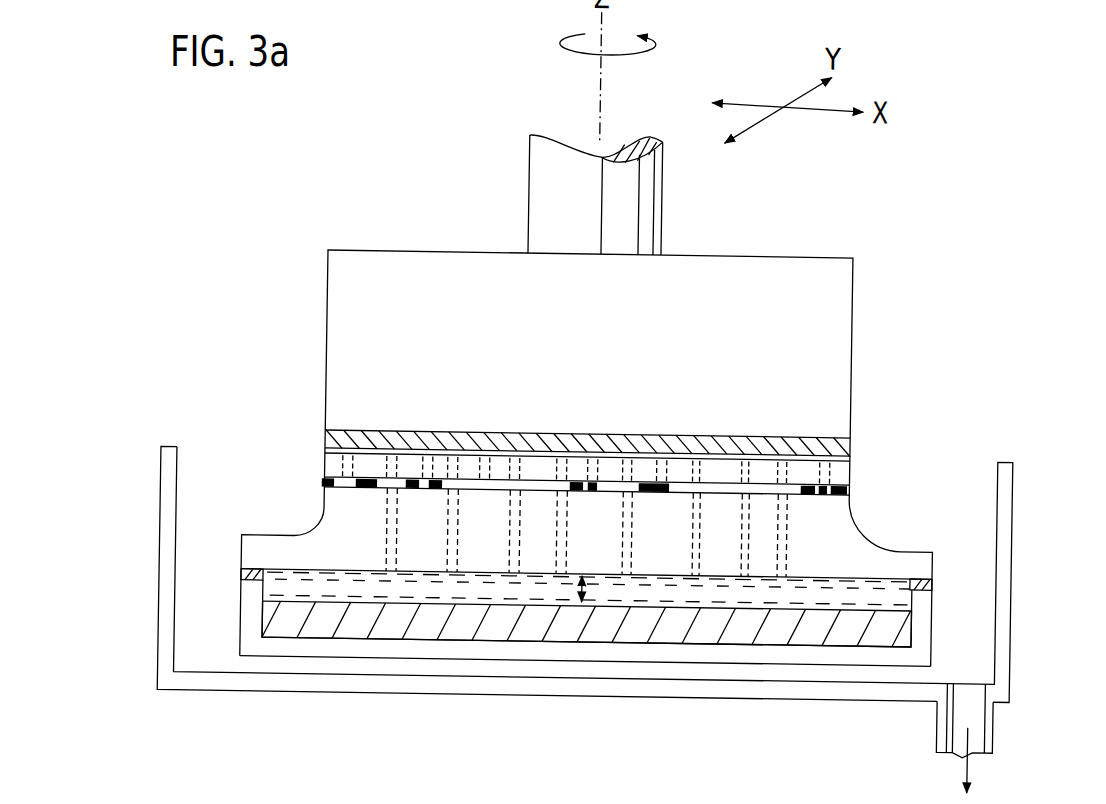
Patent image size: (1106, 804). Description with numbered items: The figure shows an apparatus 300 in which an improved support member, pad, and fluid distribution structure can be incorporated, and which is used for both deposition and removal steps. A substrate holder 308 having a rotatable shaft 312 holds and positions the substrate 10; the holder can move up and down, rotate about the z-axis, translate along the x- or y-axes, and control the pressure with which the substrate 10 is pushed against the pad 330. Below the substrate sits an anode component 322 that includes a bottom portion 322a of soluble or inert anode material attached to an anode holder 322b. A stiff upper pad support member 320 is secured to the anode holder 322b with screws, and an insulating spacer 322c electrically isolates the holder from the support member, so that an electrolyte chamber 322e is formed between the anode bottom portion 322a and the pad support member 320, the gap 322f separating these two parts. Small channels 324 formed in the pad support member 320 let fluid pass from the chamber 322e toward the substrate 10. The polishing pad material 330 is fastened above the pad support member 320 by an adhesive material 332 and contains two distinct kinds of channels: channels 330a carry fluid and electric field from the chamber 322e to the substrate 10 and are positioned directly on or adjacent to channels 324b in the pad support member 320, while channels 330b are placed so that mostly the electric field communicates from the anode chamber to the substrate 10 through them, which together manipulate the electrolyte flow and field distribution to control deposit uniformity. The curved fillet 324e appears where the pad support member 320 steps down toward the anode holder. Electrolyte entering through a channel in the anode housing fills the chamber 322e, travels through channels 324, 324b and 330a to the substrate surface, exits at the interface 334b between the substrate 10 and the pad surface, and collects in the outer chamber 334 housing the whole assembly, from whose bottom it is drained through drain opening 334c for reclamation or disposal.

The apparatus 300 is at (308, 230).
The rotatable shaft 312 is at (659, 210).
The substrate holder 308 is at (853, 302).
The substrate 10 is at (853, 444).
The interface 334b is at (333, 452).
The polishing pad material 330 is at (329, 463).
The channels 330a is at (748, 439).
The channels 330b is at (442, 443).
The adhesive material 332 is at (331, 478).
The pad support member 320 is at (354, 518).
The fillet region 324e is at (891, 529).
The anode component 322 is at (204, 647).
The bottom portion 322a is at (307, 620).
The anode holder 322b is at (258, 646).
The insulating spacer 322c is at (247, 576).
The electrolyte chamber 322e is at (888, 590).
The gap 322f is at (587, 599).
The small channels 324 is at (790, 553).
The channels 324b is at (745, 534).
The chamber 334 is at (162, 485).
The drain opening 334c is at (975, 747).